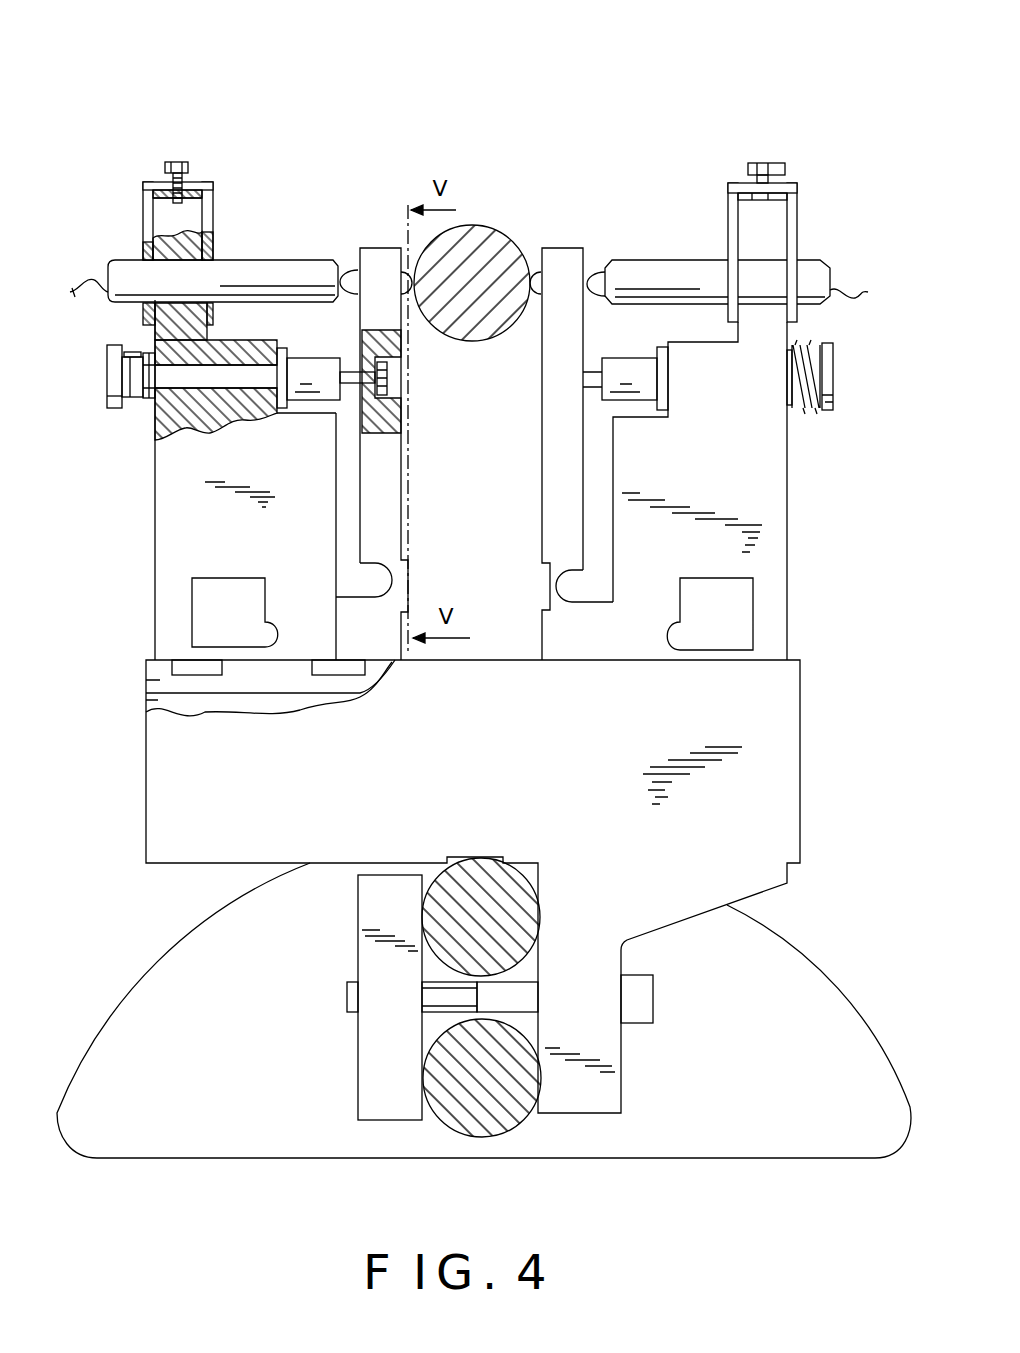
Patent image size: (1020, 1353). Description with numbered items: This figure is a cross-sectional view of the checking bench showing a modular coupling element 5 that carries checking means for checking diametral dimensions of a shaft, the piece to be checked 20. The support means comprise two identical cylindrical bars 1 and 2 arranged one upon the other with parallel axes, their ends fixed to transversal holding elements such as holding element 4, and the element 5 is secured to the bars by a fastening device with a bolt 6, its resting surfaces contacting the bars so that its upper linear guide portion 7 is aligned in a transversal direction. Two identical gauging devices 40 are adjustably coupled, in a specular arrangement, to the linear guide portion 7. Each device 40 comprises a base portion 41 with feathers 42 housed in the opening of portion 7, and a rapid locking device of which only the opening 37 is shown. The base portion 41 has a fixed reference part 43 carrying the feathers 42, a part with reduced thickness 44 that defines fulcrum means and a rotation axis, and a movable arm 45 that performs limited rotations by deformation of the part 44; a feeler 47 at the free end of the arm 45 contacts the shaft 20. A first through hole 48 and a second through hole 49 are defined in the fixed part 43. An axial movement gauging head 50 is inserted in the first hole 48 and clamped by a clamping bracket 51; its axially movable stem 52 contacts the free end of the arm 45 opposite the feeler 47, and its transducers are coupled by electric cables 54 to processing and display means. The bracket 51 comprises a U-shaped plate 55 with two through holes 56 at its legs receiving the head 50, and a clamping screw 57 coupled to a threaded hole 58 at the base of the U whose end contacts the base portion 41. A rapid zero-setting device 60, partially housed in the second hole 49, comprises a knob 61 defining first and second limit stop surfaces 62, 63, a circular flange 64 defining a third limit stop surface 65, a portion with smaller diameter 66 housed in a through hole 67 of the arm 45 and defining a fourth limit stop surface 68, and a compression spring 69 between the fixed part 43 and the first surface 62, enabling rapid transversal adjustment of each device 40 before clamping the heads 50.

The cylindrical bar 1 is at (425, 912).
The cylindrical bar 2 is at (428, 1072).
The transversal holding element 4 is at (128, 993).
The modular coupling element 5 is at (160, 793).
The bolt 6 is at (335, 1100).
The linear guide portion 7 is at (146, 718).
The piece to be checked 20 is at (488, 240).
The opening 37 is at (202, 593).
The gauging device 40 is at (355, 138).
The base portion 41 is at (165, 522).
The feathers 42 is at (150, 707).
The fixed reference part 43 is at (165, 650).
The part with reduced thickness 44 is at (383, 582).
The arm 45 is at (373, 500).
The feeler 47 is at (403, 278).
The first through hole 48 is at (150, 305).
The second through hole 49 is at (213, 435).
The axial movement gauging head 50 is at (123, 268).
The clamping bracket 51 is at (232, 185).
The axially movable stem 52 is at (353, 262).
The electric cable 54 is at (80, 283).
The plate 55 is at (213, 183).
The through holes 56 is at (146, 252).
The clamping screw 57 is at (176, 162).
The threaded hole 58 is at (152, 183).
The rapid zero-setting device 60 is at (90, 407).
The knob 61 is at (110, 368).
The first limit stop surface 62 is at (128, 410).
The second limit stop surface 63 is at (153, 400).
The circular flange 64 is at (280, 350).
The third limit stop surface 65 is at (262, 342).
The portion with smaller diameter 66 is at (350, 377).
The through hole 67 is at (347, 428).
The fourth limit stop surface 68 is at (357, 422).
The compression spring 69 is at (132, 353).